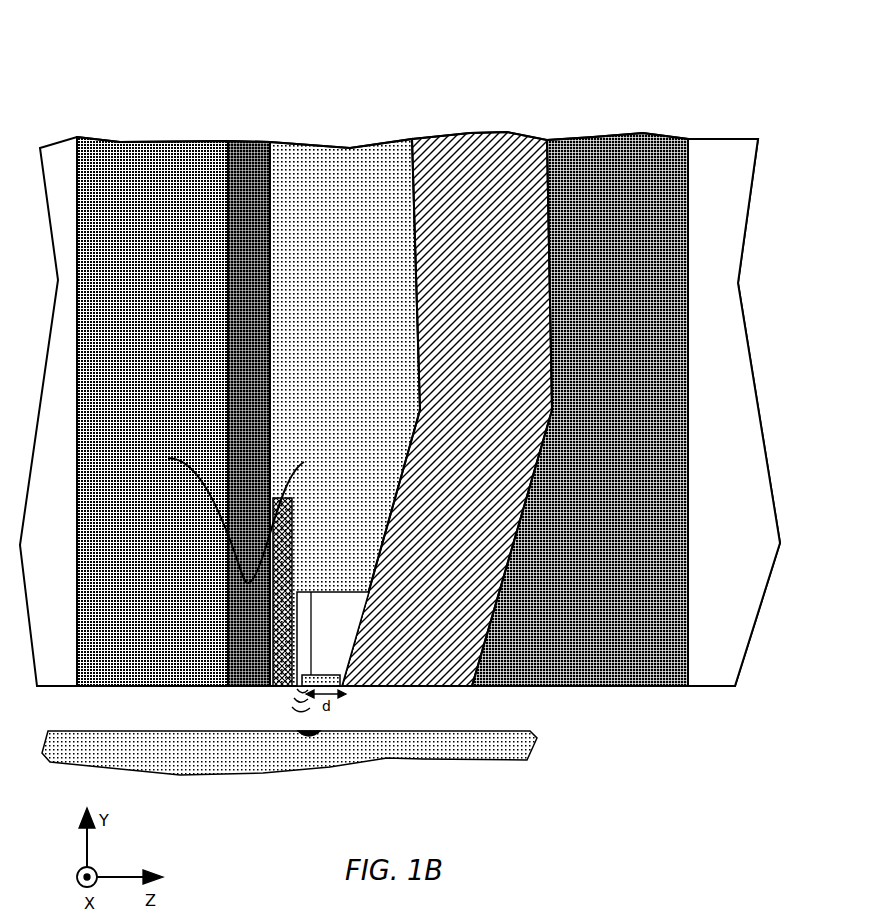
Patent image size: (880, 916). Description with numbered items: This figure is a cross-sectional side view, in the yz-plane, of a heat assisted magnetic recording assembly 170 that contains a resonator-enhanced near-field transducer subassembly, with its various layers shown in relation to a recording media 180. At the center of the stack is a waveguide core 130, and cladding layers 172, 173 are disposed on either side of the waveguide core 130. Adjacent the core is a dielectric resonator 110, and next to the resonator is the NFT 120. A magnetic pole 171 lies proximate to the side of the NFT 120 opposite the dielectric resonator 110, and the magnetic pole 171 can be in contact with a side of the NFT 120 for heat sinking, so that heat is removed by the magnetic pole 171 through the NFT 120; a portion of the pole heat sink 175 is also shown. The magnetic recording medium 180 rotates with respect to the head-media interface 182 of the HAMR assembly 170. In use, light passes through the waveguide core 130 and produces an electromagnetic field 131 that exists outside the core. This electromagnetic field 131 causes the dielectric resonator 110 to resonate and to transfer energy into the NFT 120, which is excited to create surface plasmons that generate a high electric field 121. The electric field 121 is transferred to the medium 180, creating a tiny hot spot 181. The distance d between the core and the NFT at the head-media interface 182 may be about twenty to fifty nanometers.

The HAMR assembly 170 is at (456, 33).
The cladding layer 173 is at (122, 155).
The waveguide core 130 is at (248, 155).
The cladding layer 172 is at (316, 152).
The magnetic pole 171 is at (450, 145).
The pole heat sink 175 is at (592, 148).
The head-media interface 182 is at (704, 688).
The NFT 120 is at (348, 688).
The dielectric resonator 110 is at (275, 688).
The electromagnetic field 131 is at (190, 474).
The electric field 121 is at (300, 718).
The recording media 180 is at (172, 756).
The hot spot 181 is at (313, 737).